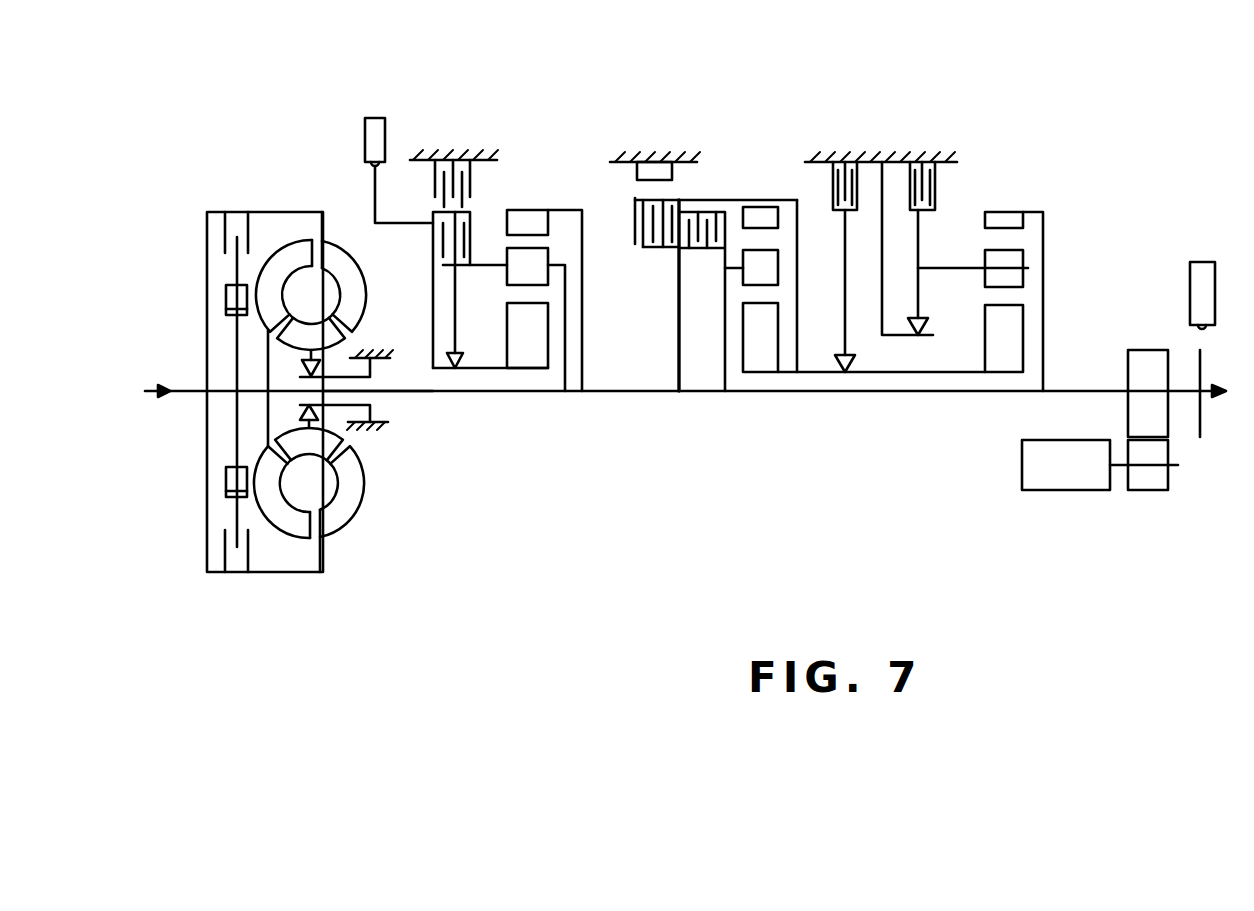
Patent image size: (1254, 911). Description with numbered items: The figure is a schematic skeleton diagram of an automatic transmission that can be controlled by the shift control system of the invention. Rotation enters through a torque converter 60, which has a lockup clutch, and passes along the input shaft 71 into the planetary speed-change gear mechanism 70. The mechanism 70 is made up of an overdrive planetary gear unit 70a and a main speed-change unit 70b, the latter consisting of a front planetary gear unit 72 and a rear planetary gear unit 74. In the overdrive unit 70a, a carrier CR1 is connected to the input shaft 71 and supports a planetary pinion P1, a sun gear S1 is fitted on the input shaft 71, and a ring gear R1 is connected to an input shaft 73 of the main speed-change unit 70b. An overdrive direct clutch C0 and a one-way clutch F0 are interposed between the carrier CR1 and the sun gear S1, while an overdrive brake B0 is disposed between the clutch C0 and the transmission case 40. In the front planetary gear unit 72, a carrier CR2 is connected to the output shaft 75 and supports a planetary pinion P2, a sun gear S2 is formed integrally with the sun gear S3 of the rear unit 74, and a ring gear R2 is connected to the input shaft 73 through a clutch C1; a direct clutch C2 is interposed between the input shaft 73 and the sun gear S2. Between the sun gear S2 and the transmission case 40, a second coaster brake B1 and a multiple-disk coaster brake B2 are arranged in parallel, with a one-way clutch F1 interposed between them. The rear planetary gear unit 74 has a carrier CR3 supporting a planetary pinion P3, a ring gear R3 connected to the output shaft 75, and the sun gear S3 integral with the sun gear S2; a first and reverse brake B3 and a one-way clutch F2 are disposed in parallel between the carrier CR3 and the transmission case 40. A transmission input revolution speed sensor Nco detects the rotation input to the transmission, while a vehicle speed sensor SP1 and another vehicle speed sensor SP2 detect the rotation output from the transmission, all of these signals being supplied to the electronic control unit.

The planetary speed-change gear mechanism 70 is at (620, 86).
The torque converter 60 is at (291, 580).
The transmission input revolution speed sensor Nco is at (373, 126).
The transmission case 40 is at (510, 124).
The overdrive brake B0 is at (465, 184).
The overdrive direct clutch C0 is at (466, 221).
The one-way clutch F0 is at (492, 341).
The overdrive planetary gear unit 70a is at (544, 363).
The ring gear R1 is at (534, 221).
The planetary pinion P1 is at (510, 272).
The sun gear S1 is at (525, 358).
The carrier CR1 is at (582, 297).
The input shaft 71 is at (433, 393).
The input shaft of the main speed-change unit 73 is at (637, 393).
The direct clutch C2 is at (634, 222).
The second coaster brake B1 is at (672, 172).
The clutch C1 is at (697, 238).
The main speed-change unit 70b is at (745, 333).
The ring gear R2 is at (760, 220).
The planetary pinion P2 is at (773, 258).
The sun gear S2 is at (760, 358).
The carrier CR2 is at (722, 327).
The front planetary gear unit 72 is at (786, 356).
The multiple-disk coaster brake B2 is at (833, 185).
The one-way clutch F1 is at (856, 366).
The first and reverse brake B3 is at (938, 183).
The one-way clutch F2 is at (927, 326).
The carrier CR3 is at (950, 268).
The ring gear R3 is at (1010, 219).
The planetary pinion P3 is at (1025, 256).
The sun gear S3 is at (1025, 338).
The rear planetary gear unit 74 is at (978, 353).
The output shaft 75 is at (1080, 390).
The vehicle speed sensor SP1 is at (1067, 480).
The vehicle speed sensor SP2 is at (1204, 278).